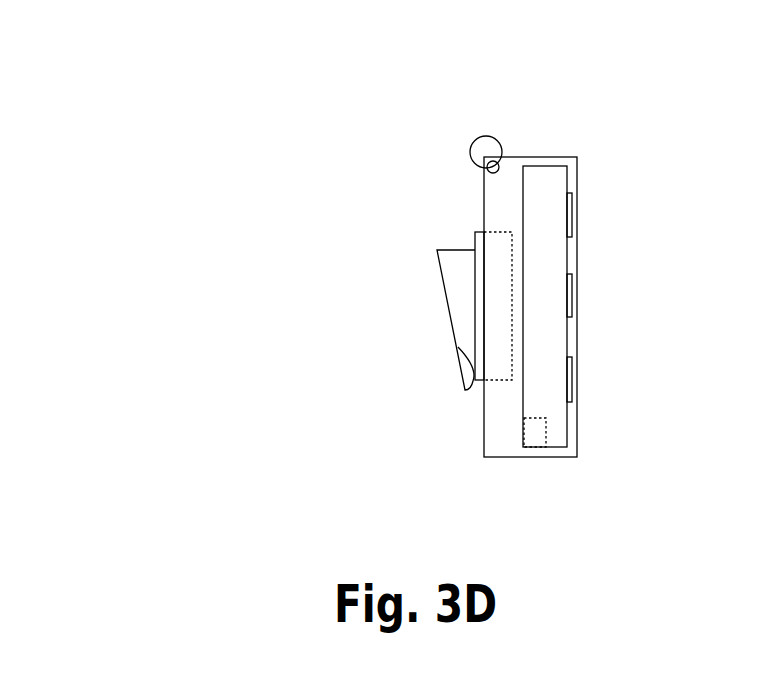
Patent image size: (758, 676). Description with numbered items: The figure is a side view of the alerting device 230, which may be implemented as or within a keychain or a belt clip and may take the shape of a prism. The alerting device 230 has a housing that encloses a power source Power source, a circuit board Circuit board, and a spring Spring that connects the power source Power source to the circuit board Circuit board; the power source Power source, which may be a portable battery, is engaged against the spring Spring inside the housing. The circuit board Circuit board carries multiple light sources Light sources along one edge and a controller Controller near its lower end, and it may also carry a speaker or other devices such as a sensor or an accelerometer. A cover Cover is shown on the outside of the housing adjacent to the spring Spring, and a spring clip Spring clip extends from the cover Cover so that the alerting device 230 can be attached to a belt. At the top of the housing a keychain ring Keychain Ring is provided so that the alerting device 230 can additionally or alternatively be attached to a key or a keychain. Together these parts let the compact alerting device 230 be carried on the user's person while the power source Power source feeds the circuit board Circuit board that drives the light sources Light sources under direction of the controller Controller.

The alerting device 230 is at (252, 60).
The keychain ring Keychain Ring is at (471, 145).
The circuit board Circuit board is at (550, 190).
The light sources Light sources is at (573, 377).
The controller Controller is at (538, 442).
The spring Spring is at (523, 307).
The cover Cover is at (474, 237).
The spring clip Spring clip is at (445, 332).
The power source Power source is at (503, 375).